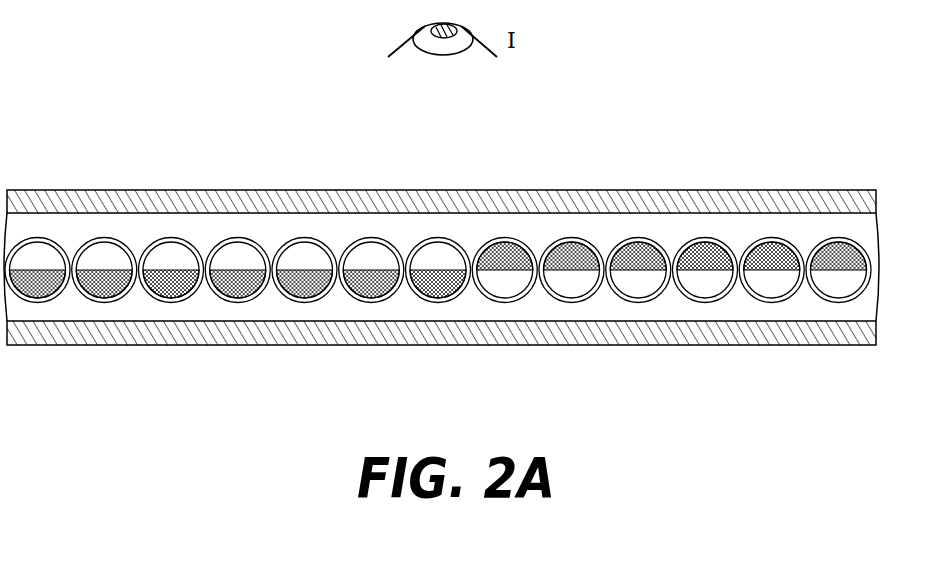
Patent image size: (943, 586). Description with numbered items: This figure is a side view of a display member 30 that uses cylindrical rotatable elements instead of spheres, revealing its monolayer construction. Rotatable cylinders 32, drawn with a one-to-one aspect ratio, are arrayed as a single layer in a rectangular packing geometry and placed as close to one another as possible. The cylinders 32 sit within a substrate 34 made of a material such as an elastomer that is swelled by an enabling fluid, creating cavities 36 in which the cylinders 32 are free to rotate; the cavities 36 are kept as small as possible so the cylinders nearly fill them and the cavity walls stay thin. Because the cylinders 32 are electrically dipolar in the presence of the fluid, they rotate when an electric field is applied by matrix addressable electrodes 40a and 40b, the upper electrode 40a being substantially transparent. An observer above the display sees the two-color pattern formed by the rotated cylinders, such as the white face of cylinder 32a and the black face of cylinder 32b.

The display member 30 is at (143, 68).
The rotatable cylinders 32 is at (240, 260).
The cylinder 32a is at (307, 293).
The cylinder 32b is at (772, 282).
The substrate 34 is at (594, 313).
The cavities 36 is at (100, 238).
The matrix addressable electrode 40a is at (810, 204).
The matrix addressable electrode 40b is at (818, 337).